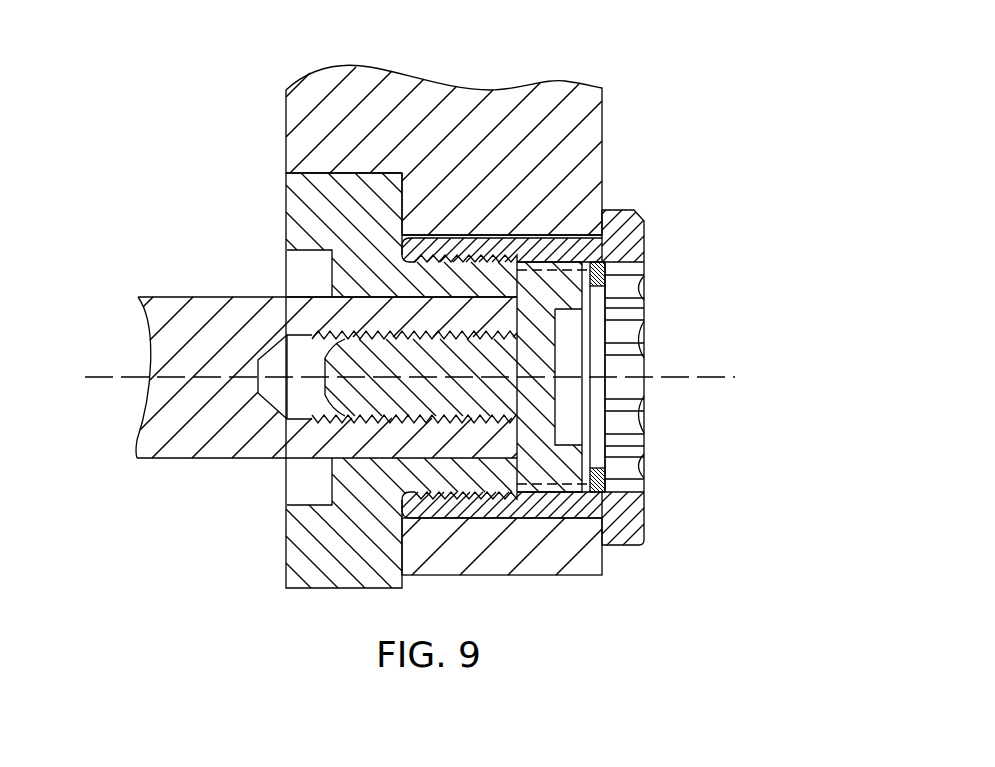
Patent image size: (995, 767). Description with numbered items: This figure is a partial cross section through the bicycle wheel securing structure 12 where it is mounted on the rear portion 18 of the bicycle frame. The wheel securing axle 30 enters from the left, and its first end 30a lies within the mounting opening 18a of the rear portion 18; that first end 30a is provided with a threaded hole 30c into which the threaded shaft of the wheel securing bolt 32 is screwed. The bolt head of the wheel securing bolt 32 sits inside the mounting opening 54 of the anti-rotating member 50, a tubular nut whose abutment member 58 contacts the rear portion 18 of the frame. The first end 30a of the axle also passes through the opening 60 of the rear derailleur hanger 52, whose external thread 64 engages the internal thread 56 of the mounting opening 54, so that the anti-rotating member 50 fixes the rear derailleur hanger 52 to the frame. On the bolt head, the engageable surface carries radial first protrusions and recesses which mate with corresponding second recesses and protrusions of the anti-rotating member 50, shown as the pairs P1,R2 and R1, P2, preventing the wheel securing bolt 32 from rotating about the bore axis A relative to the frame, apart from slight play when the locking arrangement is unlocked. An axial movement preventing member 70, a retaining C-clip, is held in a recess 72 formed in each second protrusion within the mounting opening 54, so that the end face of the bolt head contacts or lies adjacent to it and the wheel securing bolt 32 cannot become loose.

The bicycle wheel securing structure 12 is at (722, 308).
The rear portion of the bicycle frame 18 is at (604, 104).
The mounting opening 18a is at (440, 247).
The wheel securing axle 30 is at (200, 286).
The first end of the wheel securing axle 30a is at (367, 298).
The threaded hole 30c is at (317, 365).
The wheel securing bolt 32 is at (567, 498).
The anti-rotating member 50 is at (519, 524).
The rear derailleur hanger 52 is at (280, 552).
The mounting opening 54 is at (650, 420).
The internal thread 56 is at (427, 276).
The abutment member 58 is at (647, 211).
The opening 60 is at (370, 458).
The external thread 64 is at (470, 243).
The axial movement preventing member 70 is at (605, 487).
The recess 72 is at (605, 282).
The bore axis A is at (697, 377).
The first protrusion and second recess P1,R2 is at (535, 262).
The first recess and second protrusion R1, P2 is at (560, 262).